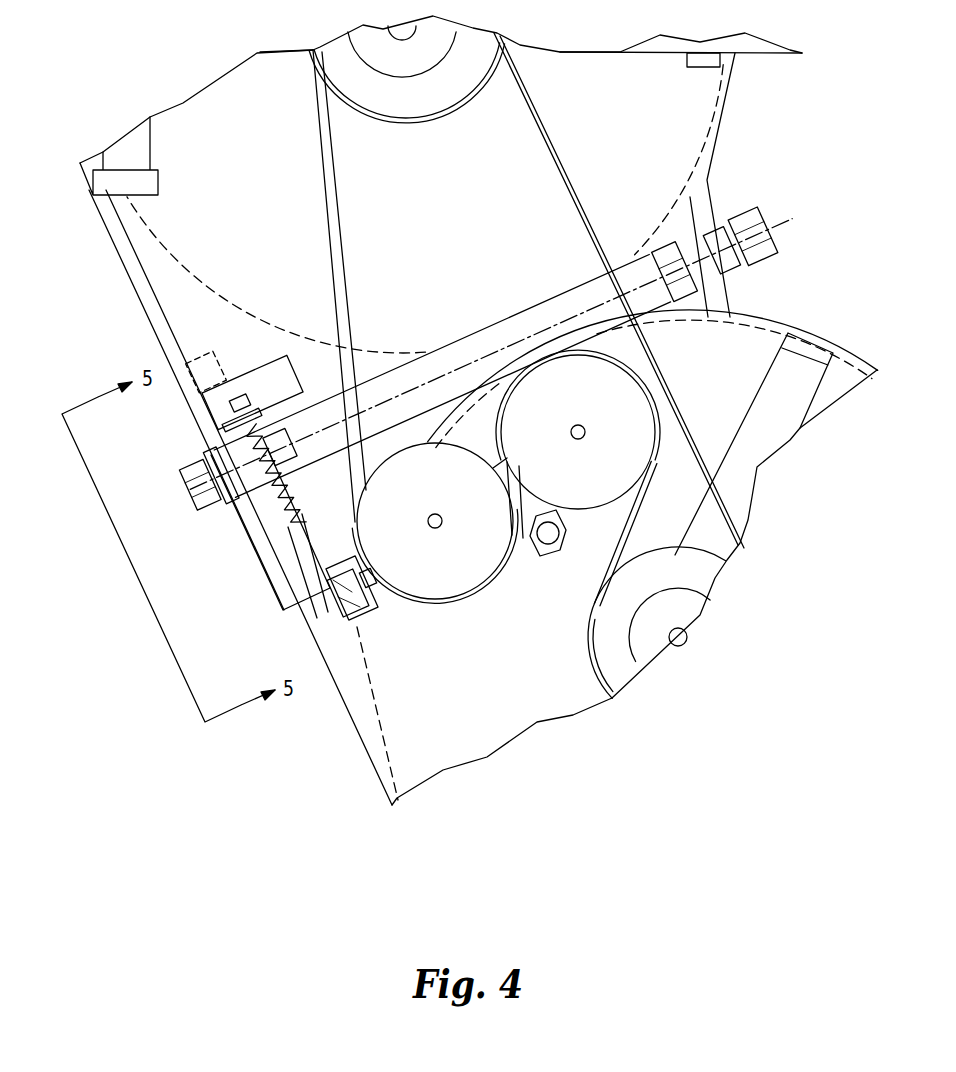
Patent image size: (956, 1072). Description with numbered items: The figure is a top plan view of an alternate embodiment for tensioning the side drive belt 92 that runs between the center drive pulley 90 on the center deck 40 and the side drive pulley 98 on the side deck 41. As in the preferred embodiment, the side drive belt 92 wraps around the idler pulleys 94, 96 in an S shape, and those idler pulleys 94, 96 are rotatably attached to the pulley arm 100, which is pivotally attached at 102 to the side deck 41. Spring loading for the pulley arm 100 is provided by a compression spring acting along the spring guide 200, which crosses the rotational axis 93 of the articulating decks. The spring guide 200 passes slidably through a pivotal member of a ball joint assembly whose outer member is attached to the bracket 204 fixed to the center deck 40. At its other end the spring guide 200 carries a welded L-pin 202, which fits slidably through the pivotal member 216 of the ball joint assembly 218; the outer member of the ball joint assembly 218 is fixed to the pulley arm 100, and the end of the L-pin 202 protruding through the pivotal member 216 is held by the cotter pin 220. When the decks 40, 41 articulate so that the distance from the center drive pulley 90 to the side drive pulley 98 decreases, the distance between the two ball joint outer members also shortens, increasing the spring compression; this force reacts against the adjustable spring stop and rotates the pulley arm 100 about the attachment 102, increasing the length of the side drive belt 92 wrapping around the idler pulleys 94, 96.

The center deck 40 is at (208, 230).
The side deck 41 is at (403, 757).
The center drive pulley 90 is at (398, 95).
The side drive belt 92 is at (573, 183).
The rotational axis 93 is at (790, 215).
The idler pulley 94 is at (453, 570).
The idler pulley 96 is at (533, 393).
The side drive pulley 98 is at (700, 577).
The pulley arm 100 is at (393, 597).
The pivotal attachment 102 is at (540, 556).
The spring guide 200 is at (287, 528).
The L-pin 202 is at (327, 600).
The bracket 204 is at (210, 395).
The pivotal member 216 is at (343, 612).
The ball joint assembly 218 is at (383, 600).
The cotter pin 220 is at (368, 577).